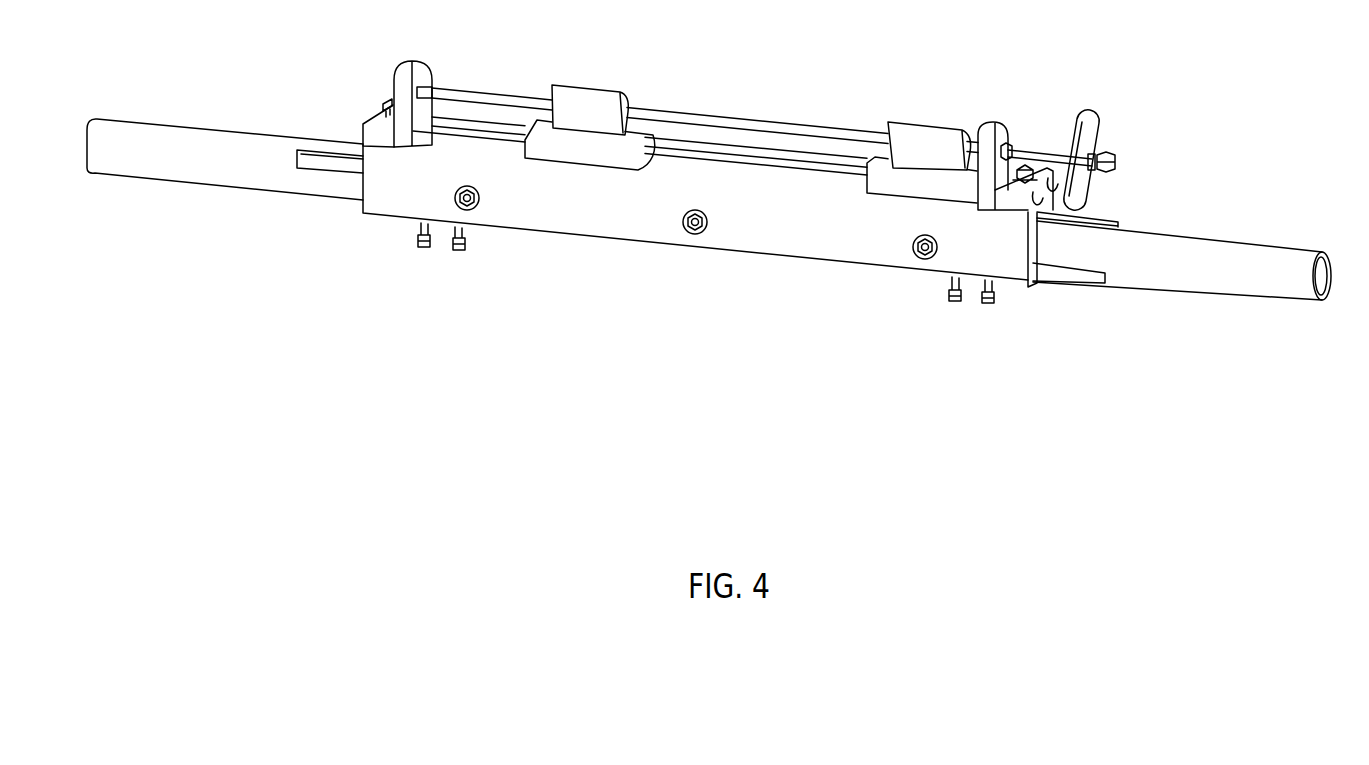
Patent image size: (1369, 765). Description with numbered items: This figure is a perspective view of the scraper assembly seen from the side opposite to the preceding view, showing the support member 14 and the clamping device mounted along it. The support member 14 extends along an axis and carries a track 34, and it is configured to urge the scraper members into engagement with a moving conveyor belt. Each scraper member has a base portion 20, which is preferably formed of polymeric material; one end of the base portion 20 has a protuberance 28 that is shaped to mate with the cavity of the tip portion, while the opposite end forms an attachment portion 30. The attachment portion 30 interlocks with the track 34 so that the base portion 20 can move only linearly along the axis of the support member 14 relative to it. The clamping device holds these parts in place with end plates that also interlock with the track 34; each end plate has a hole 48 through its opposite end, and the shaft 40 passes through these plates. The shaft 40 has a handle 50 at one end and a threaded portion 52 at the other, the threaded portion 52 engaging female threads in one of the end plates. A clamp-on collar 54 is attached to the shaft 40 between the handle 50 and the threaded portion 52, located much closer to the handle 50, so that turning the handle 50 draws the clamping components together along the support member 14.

The support member 14 is at (282, 178).
The base portion 20 is at (593, 157).
The protuberance 28 is at (583, 102).
The attachment portion 30 is at (650, 150).
The track 34 is at (515, 133).
The shaft 40 is at (723, 120).
The hole 48 is at (427, 87).
The handle 50 is at (1097, 125).
The threaded portion 52 is at (428, 89).
The clamp-on collar 54 is at (1013, 148).